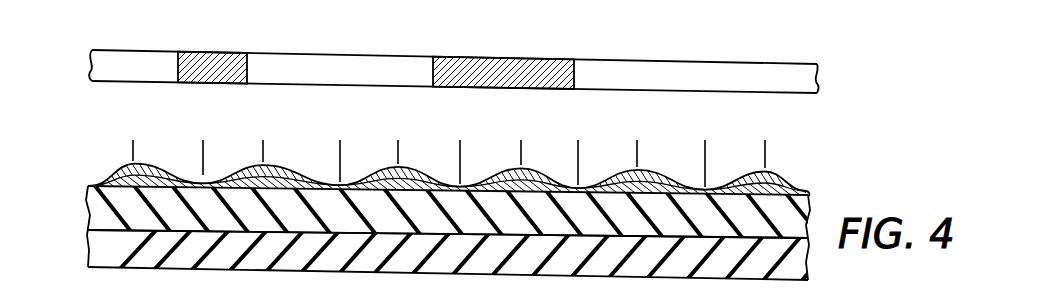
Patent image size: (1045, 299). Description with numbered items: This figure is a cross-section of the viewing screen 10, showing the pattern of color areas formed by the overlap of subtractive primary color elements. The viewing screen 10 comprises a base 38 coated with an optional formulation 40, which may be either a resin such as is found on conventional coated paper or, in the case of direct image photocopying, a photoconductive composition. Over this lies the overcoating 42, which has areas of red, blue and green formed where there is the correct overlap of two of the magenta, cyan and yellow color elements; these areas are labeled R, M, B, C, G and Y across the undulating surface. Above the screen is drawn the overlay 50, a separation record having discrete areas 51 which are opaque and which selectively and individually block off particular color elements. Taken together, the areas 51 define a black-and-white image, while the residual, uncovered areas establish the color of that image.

The viewing screen 10 is at (86, 90).
The base 38 is at (808, 256).
The optional formulation 40 is at (808, 217).
The overcoating 42 is at (808, 172).
The overlay 50 is at (454, 52).
The discrete areas 51 is at (214, 52).